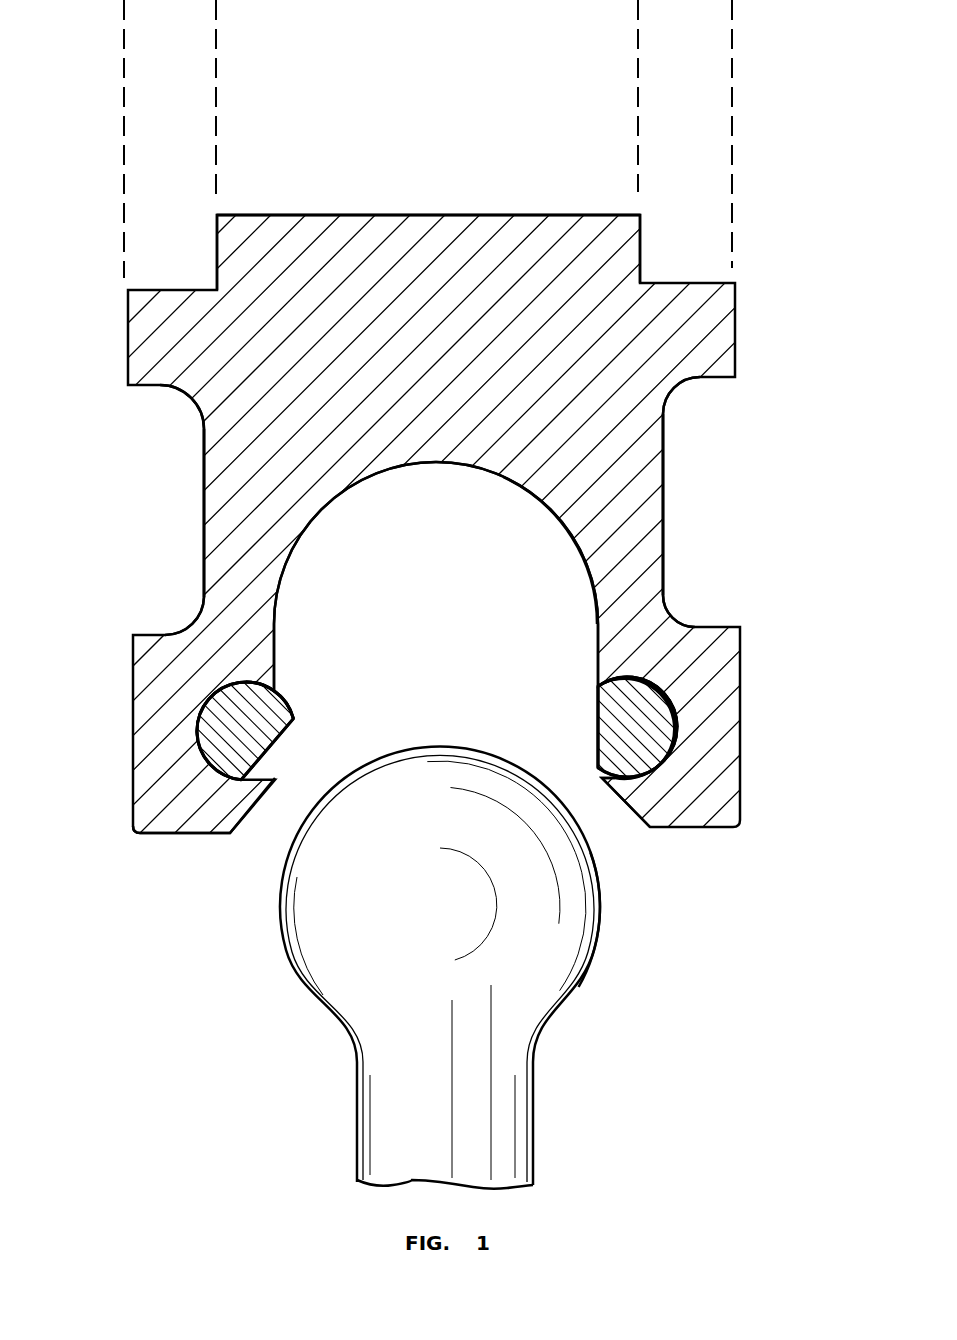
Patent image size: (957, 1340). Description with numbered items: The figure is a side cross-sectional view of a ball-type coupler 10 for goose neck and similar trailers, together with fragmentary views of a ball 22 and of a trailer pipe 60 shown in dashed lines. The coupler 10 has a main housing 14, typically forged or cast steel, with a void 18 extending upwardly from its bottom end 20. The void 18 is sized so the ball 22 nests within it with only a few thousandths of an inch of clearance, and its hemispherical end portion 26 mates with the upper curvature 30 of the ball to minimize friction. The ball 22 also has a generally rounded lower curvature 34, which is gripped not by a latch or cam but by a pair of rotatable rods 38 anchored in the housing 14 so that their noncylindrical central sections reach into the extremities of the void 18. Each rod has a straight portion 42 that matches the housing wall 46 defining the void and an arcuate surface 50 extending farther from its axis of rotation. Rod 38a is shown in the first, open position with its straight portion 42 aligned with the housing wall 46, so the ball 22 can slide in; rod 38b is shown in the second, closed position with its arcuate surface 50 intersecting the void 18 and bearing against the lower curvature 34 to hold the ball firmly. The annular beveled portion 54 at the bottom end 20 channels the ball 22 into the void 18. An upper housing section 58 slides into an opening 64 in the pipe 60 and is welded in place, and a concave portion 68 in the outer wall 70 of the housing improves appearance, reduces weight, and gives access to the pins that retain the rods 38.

The ball-type coupler 10 is at (478, 594).
The main housing 14 is at (710, 320).
The void 18 is at (528, 560).
The bottom end 20 is at (197, 836).
The ball 22 is at (447, 919).
The hemispherical end portion 26 is at (505, 478).
The upper curvature 30 is at (568, 803).
The lower curvature 34 is at (567, 1004).
The rotatable rods 38 is at (210, 710).
The rod in first open position 38a is at (680, 727).
The rod in second closed position 38b is at (198, 730).
The straight portion 42 is at (272, 748).
The housing wall 46 is at (600, 612).
The arcuate surface 50 is at (283, 694).
The annular beveled portion 54 is at (637, 818).
The upper housing section 58 is at (424, 217).
The pipe 60 is at (687, 127).
The opening 64 is at (317, 188).
The concave portion 68 is at (180, 463).
The outer wall 70 is at (204, 517).